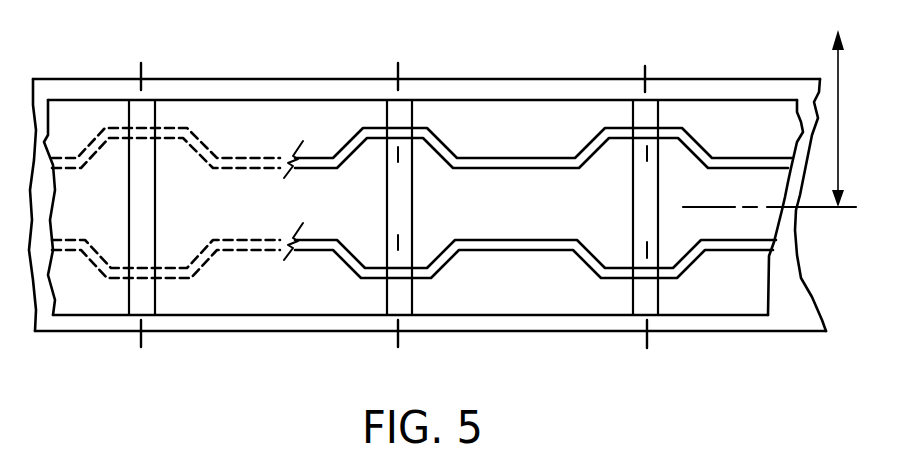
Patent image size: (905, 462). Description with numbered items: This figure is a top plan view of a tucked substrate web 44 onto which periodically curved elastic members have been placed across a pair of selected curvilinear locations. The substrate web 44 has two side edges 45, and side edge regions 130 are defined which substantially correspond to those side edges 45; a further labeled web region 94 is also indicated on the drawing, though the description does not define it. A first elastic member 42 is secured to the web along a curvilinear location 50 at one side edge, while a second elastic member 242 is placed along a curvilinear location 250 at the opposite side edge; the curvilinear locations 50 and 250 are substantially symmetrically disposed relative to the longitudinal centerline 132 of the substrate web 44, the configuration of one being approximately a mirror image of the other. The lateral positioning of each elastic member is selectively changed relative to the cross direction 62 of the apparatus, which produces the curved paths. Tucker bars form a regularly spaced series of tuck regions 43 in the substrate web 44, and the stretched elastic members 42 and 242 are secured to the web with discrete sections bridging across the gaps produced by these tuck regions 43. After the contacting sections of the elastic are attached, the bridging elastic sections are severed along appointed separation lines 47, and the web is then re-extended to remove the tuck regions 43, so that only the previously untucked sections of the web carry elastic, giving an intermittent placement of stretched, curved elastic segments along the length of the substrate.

The side edge regions 130 is at (322, 74).
The side edges 45 is at (462, 100).
The tuck regions 43 is at (628, 92).
The substrate web 44 is at (97, 108).
The second end region 94 is at (745, 120).
The elastic member 242 is at (504, 158).
The elastic member 42 is at (553, 239).
The curvilinear location 250 is at (245, 150).
The curvilinear location 50 is at (185, 265).
The separation lines 47 is at (393, 153).
The cross direction 62 is at (841, 118).
The longitudinal centerline 132 is at (808, 210).